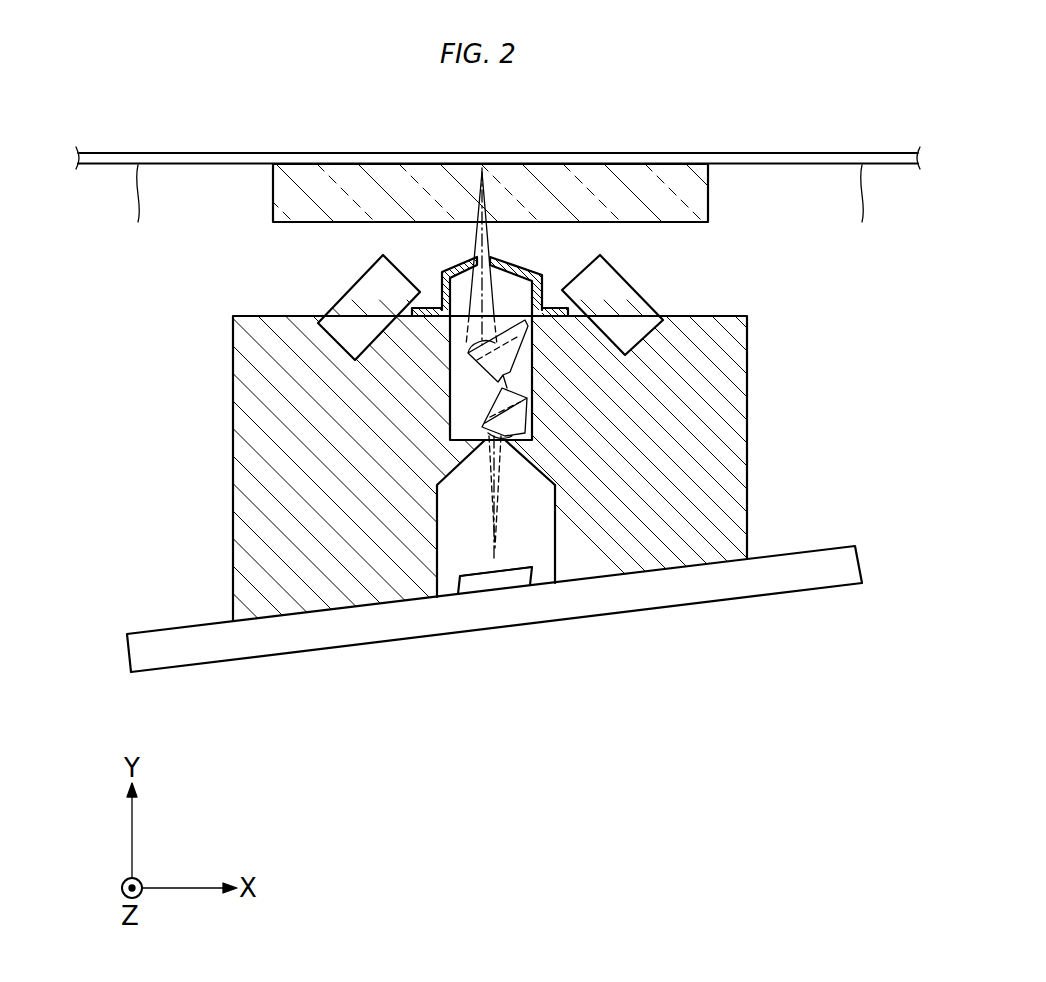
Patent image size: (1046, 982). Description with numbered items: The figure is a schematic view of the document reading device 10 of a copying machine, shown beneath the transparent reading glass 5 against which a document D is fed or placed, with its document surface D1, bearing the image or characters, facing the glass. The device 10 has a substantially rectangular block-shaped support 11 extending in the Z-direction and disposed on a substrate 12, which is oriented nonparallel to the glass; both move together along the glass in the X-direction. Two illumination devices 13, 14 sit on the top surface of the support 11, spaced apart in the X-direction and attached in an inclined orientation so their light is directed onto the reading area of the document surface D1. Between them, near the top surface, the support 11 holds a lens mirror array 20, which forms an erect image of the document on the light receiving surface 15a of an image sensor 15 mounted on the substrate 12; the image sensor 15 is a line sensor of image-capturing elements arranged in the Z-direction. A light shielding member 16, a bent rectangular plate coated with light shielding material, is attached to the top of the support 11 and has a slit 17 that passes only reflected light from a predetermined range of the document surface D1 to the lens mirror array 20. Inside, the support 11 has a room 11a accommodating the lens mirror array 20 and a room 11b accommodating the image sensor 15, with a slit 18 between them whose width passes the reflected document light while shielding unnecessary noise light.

The document D is at (108, 151).
The document surface D1 is at (99, 165).
The reading glass 5 is at (318, 162).
The document reading device 10 is at (521, 398).
The support 11 is at (738, 512).
The room 11a is at (523, 375).
The room 11b is at (547, 540).
The substrate 12 is at (167, 631).
The illumination device 13 is at (350, 292).
The illumination device 14 is at (637, 288).
The image sensor 15 is at (457, 580).
The light receiving surface 15a is at (517, 567).
The light shielding member 16 is at (457, 262).
The slit 17 is at (490, 258).
The slit 18 is at (460, 462).
The lens mirror array 20 is at (480, 400).